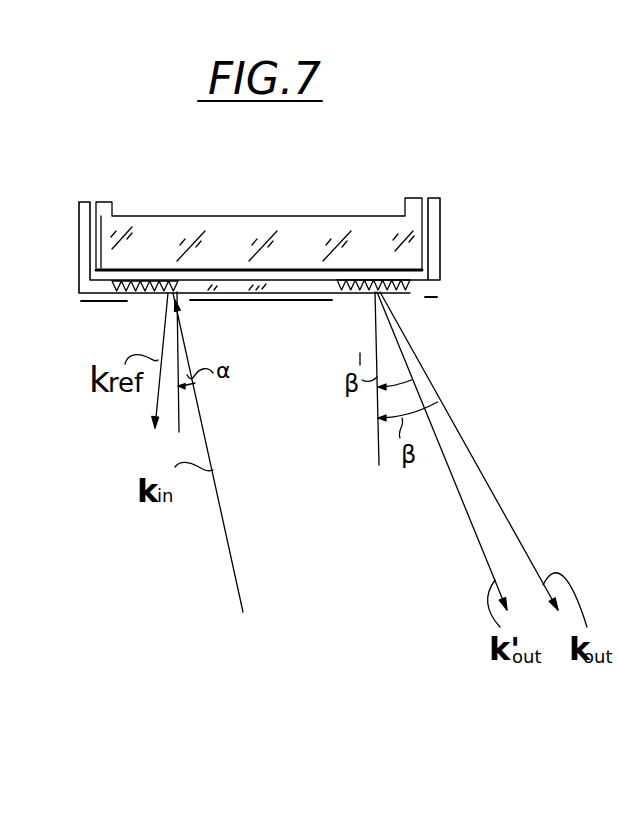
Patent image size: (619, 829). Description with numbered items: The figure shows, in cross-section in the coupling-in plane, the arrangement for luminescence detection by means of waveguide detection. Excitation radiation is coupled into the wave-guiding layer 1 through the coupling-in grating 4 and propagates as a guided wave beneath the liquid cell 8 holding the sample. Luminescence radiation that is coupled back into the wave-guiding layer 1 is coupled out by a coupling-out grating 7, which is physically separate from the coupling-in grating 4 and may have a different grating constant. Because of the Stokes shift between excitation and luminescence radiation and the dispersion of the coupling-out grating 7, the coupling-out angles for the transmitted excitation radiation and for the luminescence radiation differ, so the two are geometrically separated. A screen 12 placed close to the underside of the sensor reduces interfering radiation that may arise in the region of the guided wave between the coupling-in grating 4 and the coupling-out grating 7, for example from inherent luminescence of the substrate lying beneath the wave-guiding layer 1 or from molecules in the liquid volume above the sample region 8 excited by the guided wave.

The wave-guiding layer 1 is at (436, 281).
The coupling-in grating 4 is at (146, 283).
The coupling-out grating 7 is at (373, 281).
The liquid cell 8 is at (337, 223).
The screen 12 is at (260, 302).